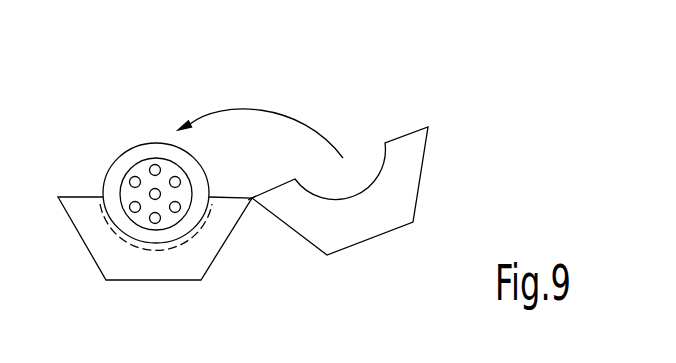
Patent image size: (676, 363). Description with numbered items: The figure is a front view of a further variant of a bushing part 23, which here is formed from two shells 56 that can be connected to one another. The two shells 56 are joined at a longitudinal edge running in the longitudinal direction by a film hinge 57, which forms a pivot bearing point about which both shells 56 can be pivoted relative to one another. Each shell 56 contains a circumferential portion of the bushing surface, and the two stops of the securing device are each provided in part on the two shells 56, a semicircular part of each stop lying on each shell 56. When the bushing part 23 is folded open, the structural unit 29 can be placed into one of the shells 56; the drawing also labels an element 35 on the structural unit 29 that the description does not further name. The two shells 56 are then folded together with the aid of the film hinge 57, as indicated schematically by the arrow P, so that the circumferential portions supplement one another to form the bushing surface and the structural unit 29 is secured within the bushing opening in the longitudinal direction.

The bushing part 23 is at (302, 217).
The structural unit 29 is at (119, 124).
The hub 35 is at (158, 125).
The shells 56 is at (148, 280).
The film hinge 57 is at (252, 198).
The arrow P is at (267, 110).